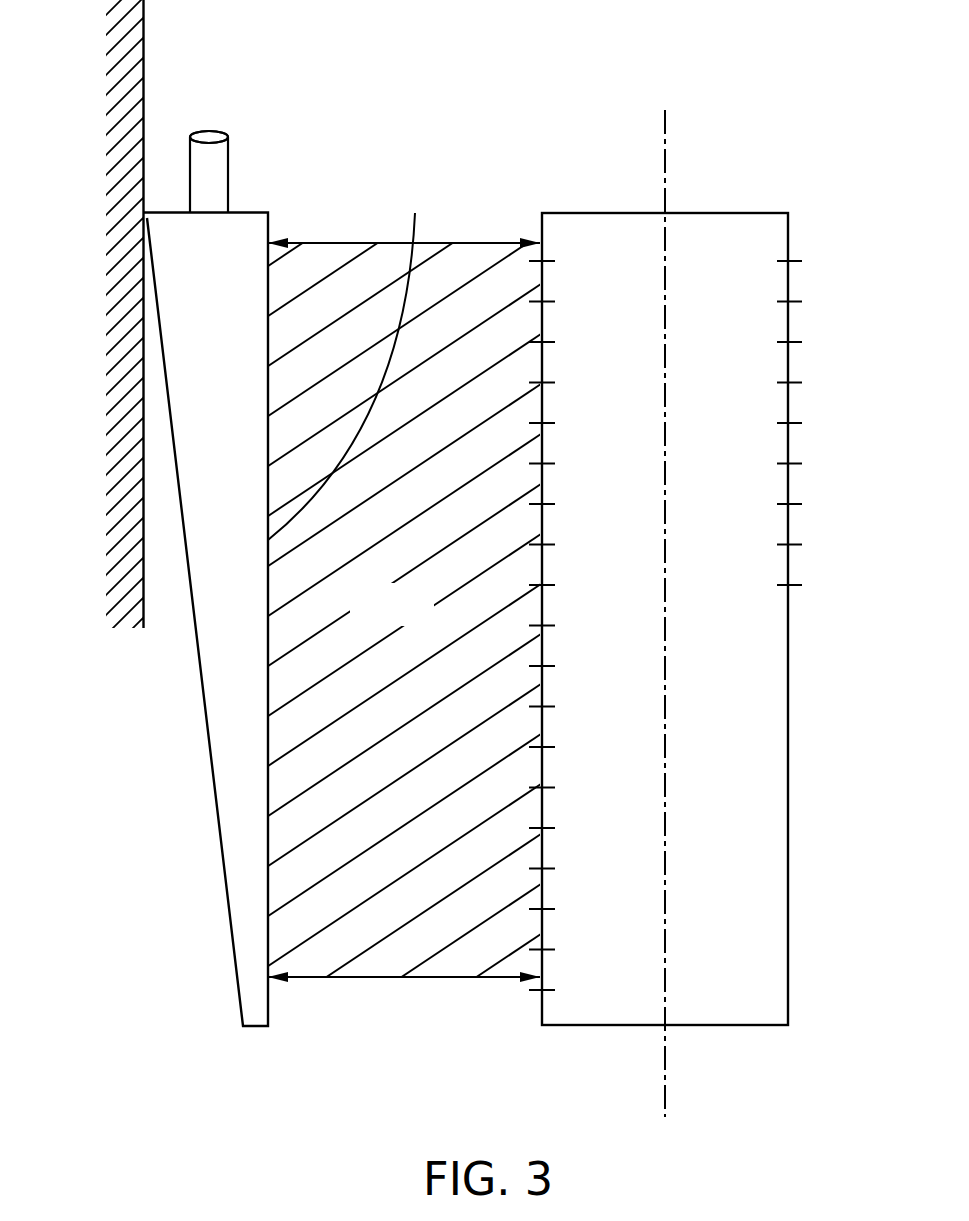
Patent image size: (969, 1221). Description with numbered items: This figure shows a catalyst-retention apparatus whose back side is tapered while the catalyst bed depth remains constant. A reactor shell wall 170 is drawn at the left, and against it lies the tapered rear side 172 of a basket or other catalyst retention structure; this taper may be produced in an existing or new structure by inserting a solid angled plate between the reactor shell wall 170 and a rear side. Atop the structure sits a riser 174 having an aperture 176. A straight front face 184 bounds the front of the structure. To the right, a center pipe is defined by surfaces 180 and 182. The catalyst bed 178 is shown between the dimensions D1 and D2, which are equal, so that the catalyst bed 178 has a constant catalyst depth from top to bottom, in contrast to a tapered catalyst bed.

The reactor shell wall 170 is at (131, 390).
The tapered rear side 172 is at (161, 331).
The riser 174 is at (230, 155).
The aperture 176 is at (208, 131).
The catalyst bed 178 is at (417, 618).
The center pipe surface 180 is at (543, 520).
The center pipe surface 182 is at (790, 560).
The straight front face 184 is at (357, 362).